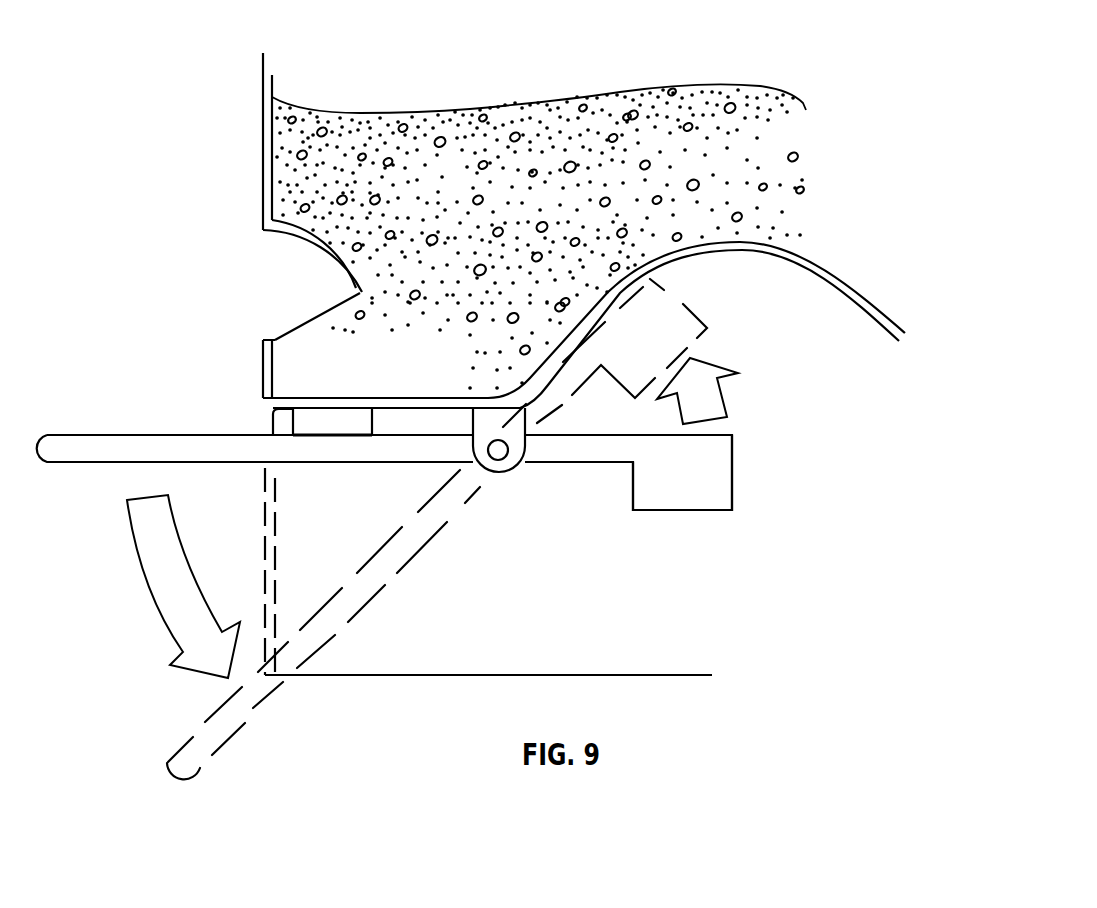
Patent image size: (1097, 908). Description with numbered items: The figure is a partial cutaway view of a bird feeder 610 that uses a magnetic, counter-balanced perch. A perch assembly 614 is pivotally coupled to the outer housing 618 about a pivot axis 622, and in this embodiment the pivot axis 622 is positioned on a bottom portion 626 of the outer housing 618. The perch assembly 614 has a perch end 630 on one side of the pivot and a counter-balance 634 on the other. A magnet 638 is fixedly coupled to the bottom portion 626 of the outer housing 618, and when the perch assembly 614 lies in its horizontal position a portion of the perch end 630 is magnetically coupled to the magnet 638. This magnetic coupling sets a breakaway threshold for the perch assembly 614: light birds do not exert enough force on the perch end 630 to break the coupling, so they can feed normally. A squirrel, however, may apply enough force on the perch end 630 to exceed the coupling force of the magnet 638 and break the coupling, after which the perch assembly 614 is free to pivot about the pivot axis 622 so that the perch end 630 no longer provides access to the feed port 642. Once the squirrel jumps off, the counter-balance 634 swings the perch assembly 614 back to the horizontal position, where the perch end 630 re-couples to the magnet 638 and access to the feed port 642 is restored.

The bird feeder 610 is at (166, 94).
The outer housing 618 is at (265, 158).
The feed port 642 is at (318, 285).
The magnet 638 is at (350, 422).
The perch assembly 614 is at (407, 452).
The bottom portion 626 is at (460, 405).
The pivot axis 622 is at (500, 450).
The perch end 630 is at (67, 452).
The counter-balance 634 is at (692, 483).